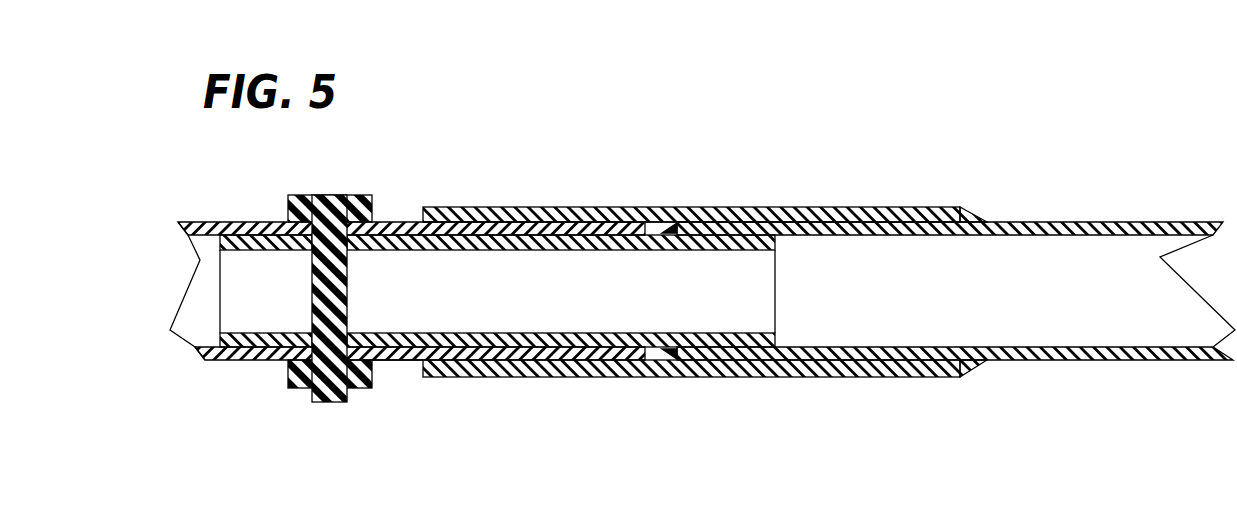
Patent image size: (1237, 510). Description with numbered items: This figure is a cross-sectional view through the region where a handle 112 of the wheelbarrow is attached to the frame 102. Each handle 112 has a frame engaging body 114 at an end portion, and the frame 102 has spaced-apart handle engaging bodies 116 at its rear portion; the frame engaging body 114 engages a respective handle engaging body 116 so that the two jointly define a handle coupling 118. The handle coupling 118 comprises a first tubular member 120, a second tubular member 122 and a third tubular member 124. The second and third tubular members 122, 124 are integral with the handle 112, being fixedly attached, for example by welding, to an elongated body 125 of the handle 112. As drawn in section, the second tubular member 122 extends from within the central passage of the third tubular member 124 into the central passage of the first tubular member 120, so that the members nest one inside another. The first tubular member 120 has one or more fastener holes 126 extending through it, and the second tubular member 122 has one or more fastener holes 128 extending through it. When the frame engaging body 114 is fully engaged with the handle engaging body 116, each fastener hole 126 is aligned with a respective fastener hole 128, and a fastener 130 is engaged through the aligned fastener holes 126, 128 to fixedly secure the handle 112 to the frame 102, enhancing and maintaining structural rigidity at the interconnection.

The frame 102 is at (232, 362).
The handle 112 is at (1160, 228).
The frame engaging body 114 is at (915, 182).
The handle engaging body 116 is at (401, 373).
The handle coupling 118 is at (640, 203).
The first tubular member 120 is at (402, 223).
The second tubular member 122 is at (733, 237).
The third tubular member 124 is at (733, 215).
The elongated body 125 is at (1002, 222).
The fastener hole 126 is at (290, 362).
The fastener hole 128 is at (292, 340).
The fastener 130 is at (332, 193).